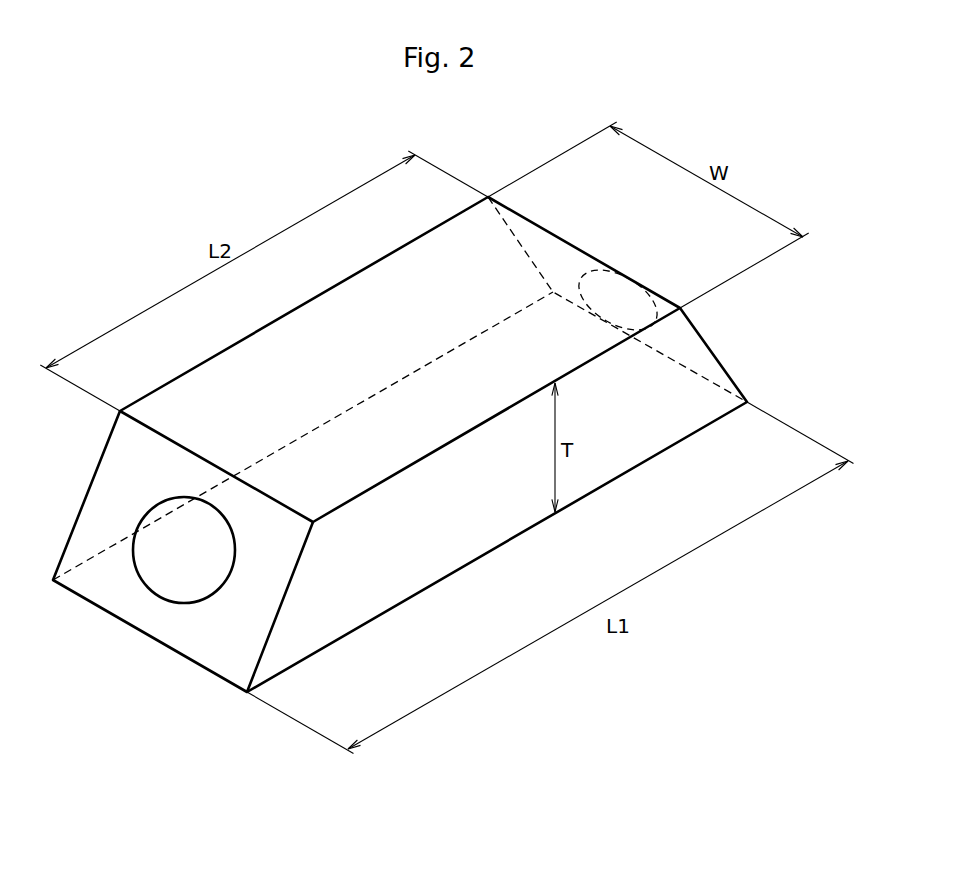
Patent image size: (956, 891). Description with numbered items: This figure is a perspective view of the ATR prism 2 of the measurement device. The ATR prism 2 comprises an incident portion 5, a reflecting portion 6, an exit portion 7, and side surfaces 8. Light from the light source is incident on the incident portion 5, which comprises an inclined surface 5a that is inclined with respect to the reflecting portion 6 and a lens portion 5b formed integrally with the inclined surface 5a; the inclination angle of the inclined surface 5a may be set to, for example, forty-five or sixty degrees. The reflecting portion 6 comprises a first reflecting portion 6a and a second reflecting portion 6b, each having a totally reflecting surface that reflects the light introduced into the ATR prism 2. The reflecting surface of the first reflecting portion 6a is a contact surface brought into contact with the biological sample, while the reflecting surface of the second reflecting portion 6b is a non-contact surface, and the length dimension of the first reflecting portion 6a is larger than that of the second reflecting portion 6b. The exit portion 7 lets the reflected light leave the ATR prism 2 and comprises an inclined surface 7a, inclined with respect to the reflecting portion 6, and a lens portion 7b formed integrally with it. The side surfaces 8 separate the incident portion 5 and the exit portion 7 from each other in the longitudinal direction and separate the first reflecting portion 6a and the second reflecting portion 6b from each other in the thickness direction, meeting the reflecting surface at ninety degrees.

The ATR prism 2 is at (492, 182).
The incident portion 5 is at (183, 577).
The inclined surface 5a is at (122, 598).
The lens portion 5b is at (185, 585).
The reflecting portion 6 is at (400, 492).
The first reflecting portion 6a is at (423, 556).
The second reflecting portion 6b is at (385, 440).
The exit portion 7 is at (623, 269).
The inclined surface 7a is at (558, 262).
The lens portion 7b is at (583, 280).
The side surfaces 8 is at (268, 382).